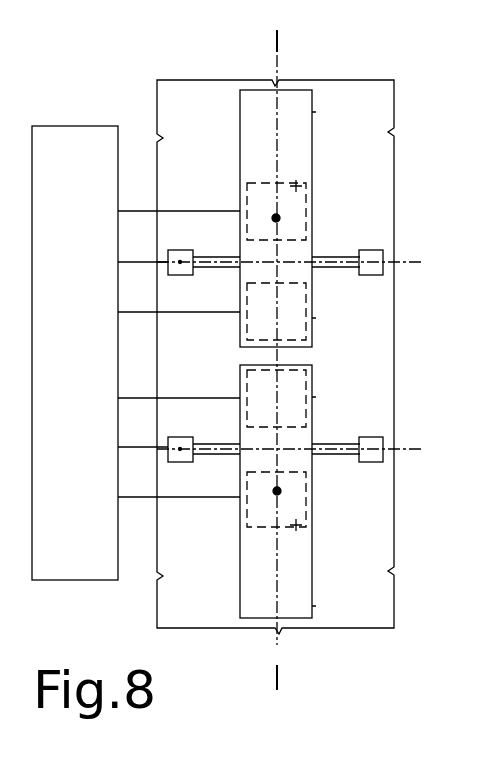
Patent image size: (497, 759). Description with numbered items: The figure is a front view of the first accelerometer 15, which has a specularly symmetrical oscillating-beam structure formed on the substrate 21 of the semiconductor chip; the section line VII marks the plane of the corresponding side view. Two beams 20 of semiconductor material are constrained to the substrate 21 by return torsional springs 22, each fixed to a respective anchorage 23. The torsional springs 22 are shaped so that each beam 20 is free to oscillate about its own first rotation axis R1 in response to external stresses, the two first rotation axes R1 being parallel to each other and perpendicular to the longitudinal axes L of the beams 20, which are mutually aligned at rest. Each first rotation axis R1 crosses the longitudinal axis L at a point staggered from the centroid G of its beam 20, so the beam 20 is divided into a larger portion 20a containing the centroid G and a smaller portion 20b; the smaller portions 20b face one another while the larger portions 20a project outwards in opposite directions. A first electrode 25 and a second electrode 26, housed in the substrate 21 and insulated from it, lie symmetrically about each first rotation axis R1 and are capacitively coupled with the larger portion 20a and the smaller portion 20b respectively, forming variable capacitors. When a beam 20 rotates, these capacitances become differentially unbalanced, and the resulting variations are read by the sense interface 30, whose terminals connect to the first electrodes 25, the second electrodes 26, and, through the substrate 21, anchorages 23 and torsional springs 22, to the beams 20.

The first accelerometer 15 is at (104, 86).
The beam 20 is at (231, 183).
The larger portion 20a is at (312, 112).
The smaller portion 20b is at (313, 397).
The substrate 21 is at (178, 629).
The return torsional spring 22 is at (215, 268).
The anchorage 23 is at (180, 250).
The first electrode 25 is at (300, 183).
The second electrode 26 is at (249, 380).
The sense interface 30 is at (62, 572).
The centroid G is at (280, 218).
The first rotation axis R1 is at (412, 264).
The longitudinal axis L is at (275, 67).
The section line VII is at (306, 43).